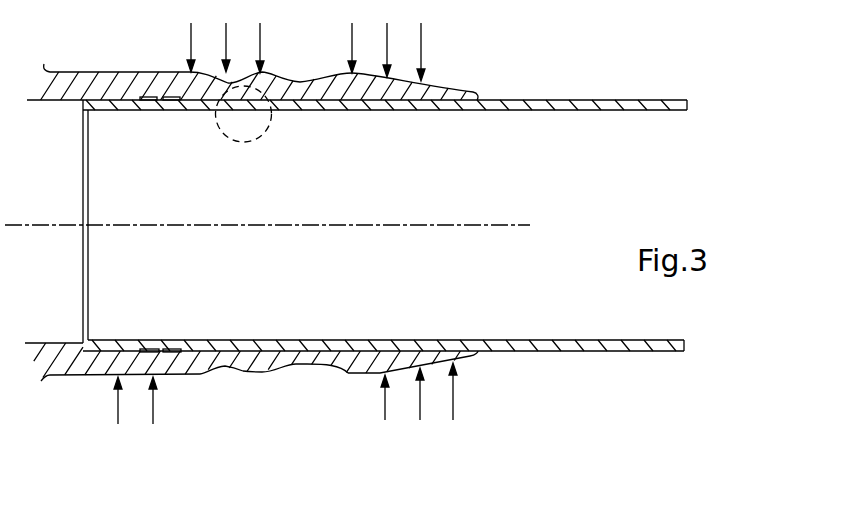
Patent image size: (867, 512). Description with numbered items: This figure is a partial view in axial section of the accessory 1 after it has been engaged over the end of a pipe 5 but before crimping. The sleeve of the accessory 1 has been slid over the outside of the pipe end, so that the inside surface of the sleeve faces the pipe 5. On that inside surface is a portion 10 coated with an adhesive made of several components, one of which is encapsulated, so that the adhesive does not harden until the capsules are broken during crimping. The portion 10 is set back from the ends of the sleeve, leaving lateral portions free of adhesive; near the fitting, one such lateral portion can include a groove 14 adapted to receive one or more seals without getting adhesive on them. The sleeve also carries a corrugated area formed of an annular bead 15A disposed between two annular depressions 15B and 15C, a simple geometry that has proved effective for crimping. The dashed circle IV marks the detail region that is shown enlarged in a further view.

The accessory 1 is at (183, 385).
The pipe 5 is at (547, 99).
The portion coated with adhesive 10 is at (300, 106).
The groove 14 is at (168, 342).
The annular bead 15A is at (267, 368).
The annular depression 15B is at (230, 368).
The annular depression 15C is at (310, 368).
The detail circle IV is at (219, 132).